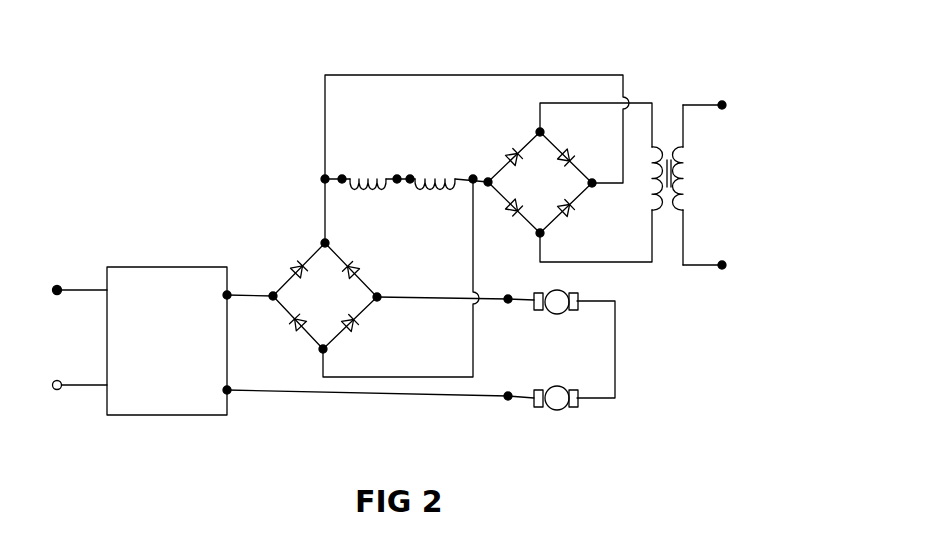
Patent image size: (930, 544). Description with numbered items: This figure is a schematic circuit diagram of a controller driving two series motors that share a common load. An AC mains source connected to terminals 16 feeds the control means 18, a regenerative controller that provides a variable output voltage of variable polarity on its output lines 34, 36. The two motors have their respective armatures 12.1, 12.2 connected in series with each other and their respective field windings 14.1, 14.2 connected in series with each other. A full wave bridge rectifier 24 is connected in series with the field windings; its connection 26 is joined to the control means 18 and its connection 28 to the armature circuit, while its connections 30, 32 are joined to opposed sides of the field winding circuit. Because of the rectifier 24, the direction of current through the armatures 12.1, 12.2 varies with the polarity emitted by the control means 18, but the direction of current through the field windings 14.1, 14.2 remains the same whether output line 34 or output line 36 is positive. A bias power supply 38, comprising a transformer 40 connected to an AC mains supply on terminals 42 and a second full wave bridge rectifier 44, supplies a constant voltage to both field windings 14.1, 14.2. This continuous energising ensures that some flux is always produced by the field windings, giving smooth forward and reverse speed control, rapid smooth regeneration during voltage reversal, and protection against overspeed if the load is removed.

The armature 12.1 is at (556, 296).
The armature 12.2 is at (557, 404).
The field winding 14.1 is at (358, 175).
The field winding 14.2 is at (437, 175).
The terminals 16 is at (57, 296).
The control means 18 is at (154, 280).
The full wave bridge rectifier 24 is at (328, 282).
The connection 26 is at (270, 301).
The connection 28 is at (380, 291).
The connection 30 is at (328, 243).
The connection 32 is at (327, 350).
The output line 34 is at (250, 291).
The output line 36 is at (268, 395).
The bias power supply 38 is at (562, 76).
The transformer 40 is at (671, 105).
The terminals 42 is at (738, 265).
The full wave bridge rectifier 44 is at (505, 145).